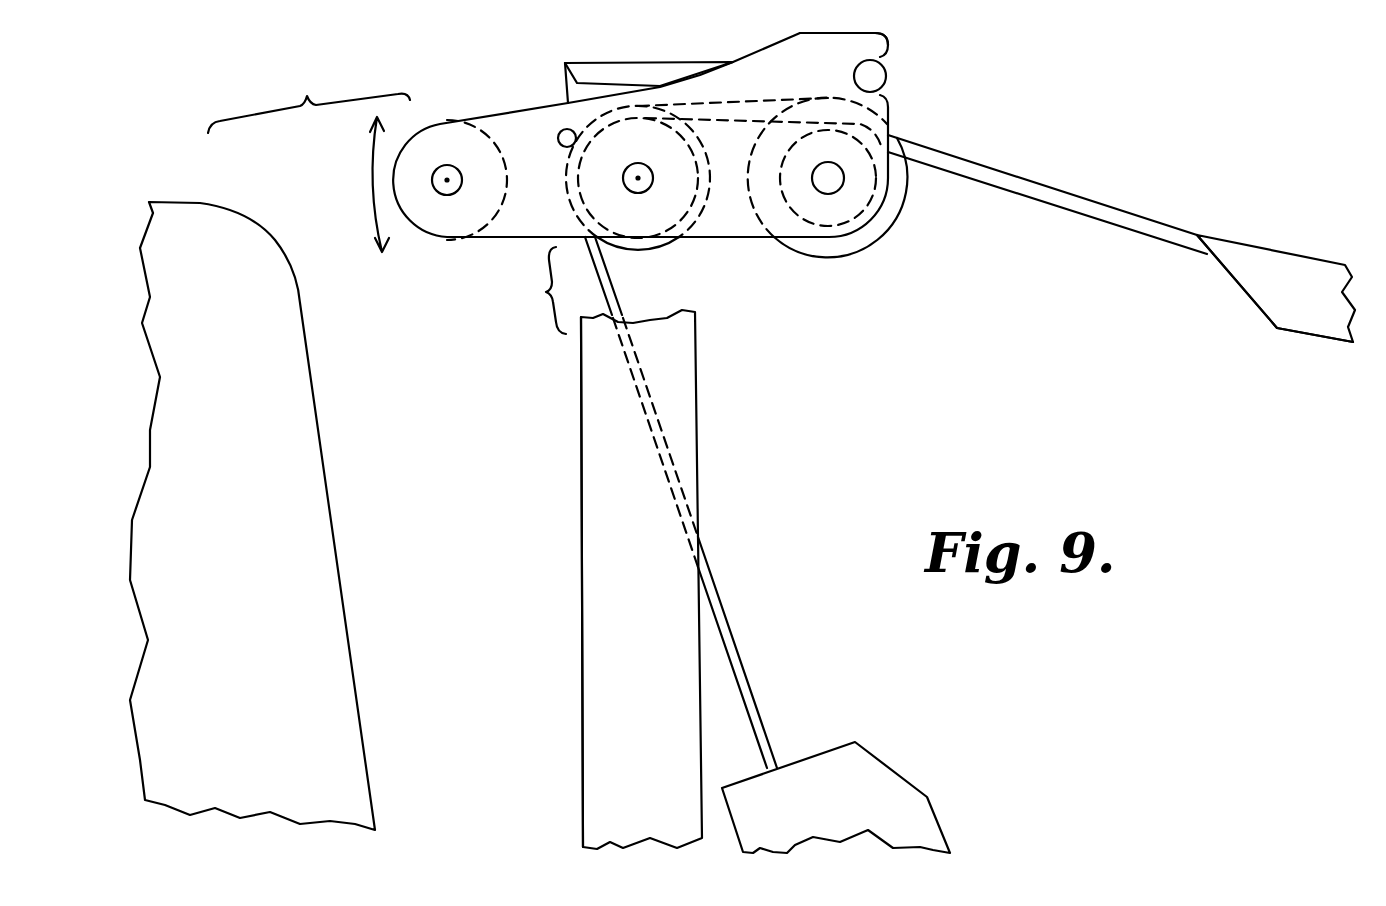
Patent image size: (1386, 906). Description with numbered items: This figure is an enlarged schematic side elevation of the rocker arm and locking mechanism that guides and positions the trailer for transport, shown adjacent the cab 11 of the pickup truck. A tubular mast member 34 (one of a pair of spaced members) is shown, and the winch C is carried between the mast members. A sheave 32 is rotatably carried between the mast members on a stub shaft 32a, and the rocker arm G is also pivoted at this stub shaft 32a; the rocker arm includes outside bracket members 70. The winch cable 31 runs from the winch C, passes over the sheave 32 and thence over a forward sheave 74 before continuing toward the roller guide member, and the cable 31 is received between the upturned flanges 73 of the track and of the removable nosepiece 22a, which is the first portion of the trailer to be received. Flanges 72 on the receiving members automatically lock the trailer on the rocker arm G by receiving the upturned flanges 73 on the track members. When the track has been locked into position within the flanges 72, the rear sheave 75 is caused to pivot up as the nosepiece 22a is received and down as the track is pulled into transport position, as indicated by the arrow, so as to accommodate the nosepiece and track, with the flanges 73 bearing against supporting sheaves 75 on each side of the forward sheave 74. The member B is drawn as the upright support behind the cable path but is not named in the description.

The cab 11 is at (308, 455).
The base post B is at (602, 430).
The mast member 34 is at (602, 498).
The winch C is at (830, 760).
The winch cable 31 is at (707, 550).
The nosepiece 22a is at (1250, 255).
The upturned flange 73 is at (1278, 305).
The outside bracket member 70 is at (533, 224).
The rocker arm G is at (853, 32).
The flange 72 is at (610, 72).
The rear sheave 75 is at (437, 238).
The stub shaft 32a is at (640, 183).
The sheave 32 is at (698, 190).
The forward sheave 74 is at (793, 228).